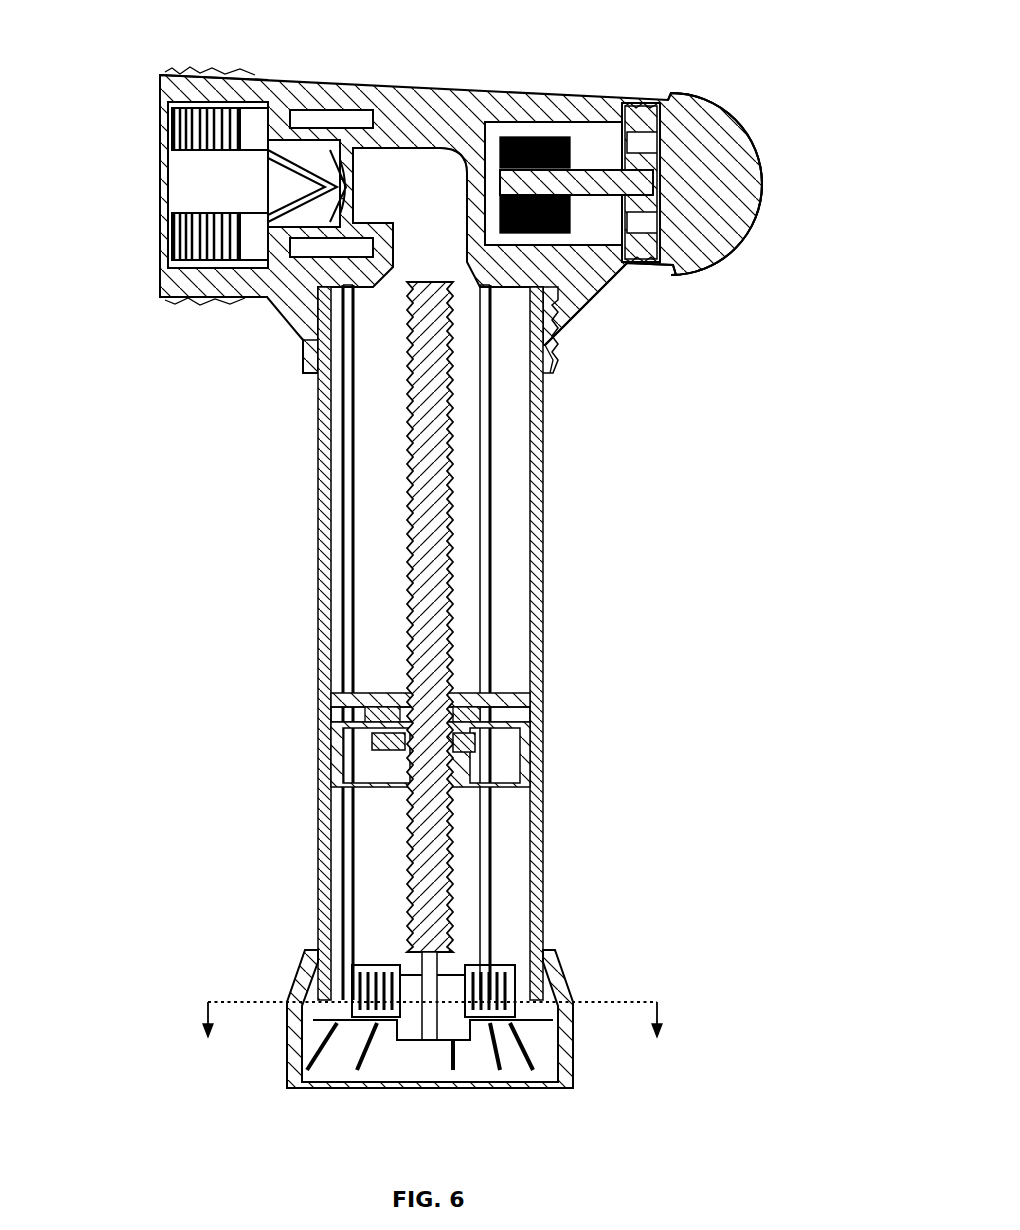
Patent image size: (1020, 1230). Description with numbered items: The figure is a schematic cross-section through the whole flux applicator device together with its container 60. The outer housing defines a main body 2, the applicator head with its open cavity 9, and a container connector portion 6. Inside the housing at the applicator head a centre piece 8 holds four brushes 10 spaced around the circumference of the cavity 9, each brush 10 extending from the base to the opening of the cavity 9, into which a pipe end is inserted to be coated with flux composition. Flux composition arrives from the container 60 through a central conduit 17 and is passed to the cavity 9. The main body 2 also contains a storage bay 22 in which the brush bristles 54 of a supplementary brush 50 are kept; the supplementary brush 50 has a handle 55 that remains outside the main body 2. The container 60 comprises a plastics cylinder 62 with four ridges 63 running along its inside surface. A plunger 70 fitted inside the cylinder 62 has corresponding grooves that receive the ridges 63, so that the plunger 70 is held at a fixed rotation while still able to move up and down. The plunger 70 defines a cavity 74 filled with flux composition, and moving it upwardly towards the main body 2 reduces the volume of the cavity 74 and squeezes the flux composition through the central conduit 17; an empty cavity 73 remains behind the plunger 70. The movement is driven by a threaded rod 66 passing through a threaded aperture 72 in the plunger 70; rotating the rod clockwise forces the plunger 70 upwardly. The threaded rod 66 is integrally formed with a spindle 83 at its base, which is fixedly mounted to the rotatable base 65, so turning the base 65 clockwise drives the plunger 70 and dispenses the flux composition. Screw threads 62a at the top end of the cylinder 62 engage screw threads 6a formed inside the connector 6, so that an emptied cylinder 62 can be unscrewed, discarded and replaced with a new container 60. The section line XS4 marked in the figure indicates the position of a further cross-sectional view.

The main body 2 is at (418, 88).
The container connector portion 6 is at (604, 297).
The screw threads 6a is at (560, 352).
The centre piece 8 is at (178, 92).
The cavity 9 is at (221, 197).
The brush 10 is at (217, 152).
The central conduit 17 is at (437, 195).
The storage bay 22 is at (598, 143).
The supplementary brush 50 is at (693, 90).
The brush bristles 54 is at (545, 138).
The handle 55 is at (758, 145).
The container 60 is at (472, 642).
The cylinder 62 is at (547, 513).
The screw threads 62a is at (549, 318).
The ridges 63 is at (493, 552).
The rotatable base 65 is at (575, 1062).
The threaded rod 66 is at (432, 463).
The plunger 70 is at (533, 707).
The threaded aperture 72 is at (470, 742).
The empty cavity 73 is at (394, 871).
The cavity 74 is at (394, 589).
The spindle 83 is at (390, 955).
The section line XS4 is at (252, 1002).